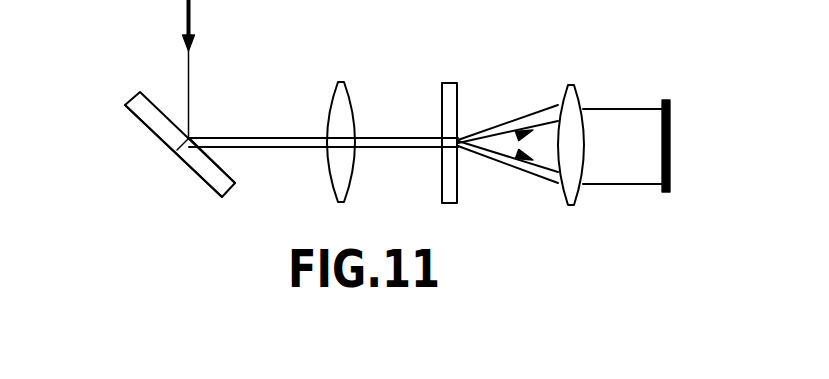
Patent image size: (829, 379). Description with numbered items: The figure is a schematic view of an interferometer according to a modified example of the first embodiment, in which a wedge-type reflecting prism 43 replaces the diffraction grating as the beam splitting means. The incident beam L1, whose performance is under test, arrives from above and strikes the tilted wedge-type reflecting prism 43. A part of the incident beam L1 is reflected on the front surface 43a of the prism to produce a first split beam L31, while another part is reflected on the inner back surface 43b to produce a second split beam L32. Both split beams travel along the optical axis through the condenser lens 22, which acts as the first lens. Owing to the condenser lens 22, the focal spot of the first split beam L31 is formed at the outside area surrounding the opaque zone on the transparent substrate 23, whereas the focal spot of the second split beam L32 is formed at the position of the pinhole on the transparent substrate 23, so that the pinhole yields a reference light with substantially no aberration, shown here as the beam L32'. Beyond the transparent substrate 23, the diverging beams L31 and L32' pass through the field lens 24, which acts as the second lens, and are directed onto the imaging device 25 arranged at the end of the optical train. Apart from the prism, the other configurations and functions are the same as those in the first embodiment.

The condenser lens 22 is at (345, 82).
The transparent substrate 23 is at (452, 83).
The field lens 24 is at (573, 85).
The imaging device 25 is at (667, 100).
The wedge-type reflecting prism 43 is at (191, 154).
The front surface 43a is at (230, 177).
The back surface 43b is at (191, 173).
The incident beam L1 is at (208, 69).
The first split beam L31 is at (373, 140).
The second split beam L32 is at (373, 140).
The light beam L32' is at (565, 155).